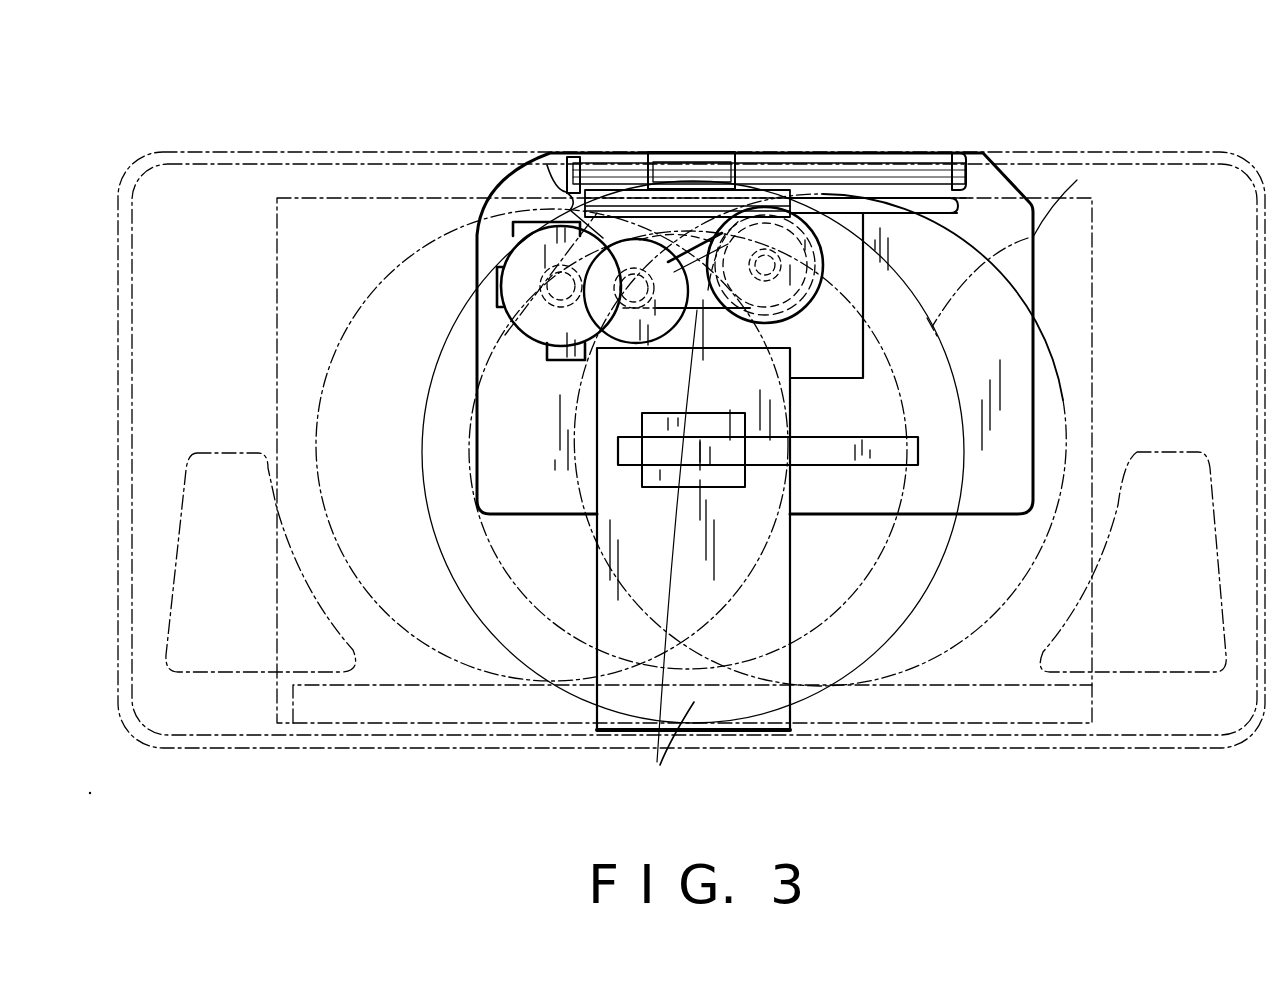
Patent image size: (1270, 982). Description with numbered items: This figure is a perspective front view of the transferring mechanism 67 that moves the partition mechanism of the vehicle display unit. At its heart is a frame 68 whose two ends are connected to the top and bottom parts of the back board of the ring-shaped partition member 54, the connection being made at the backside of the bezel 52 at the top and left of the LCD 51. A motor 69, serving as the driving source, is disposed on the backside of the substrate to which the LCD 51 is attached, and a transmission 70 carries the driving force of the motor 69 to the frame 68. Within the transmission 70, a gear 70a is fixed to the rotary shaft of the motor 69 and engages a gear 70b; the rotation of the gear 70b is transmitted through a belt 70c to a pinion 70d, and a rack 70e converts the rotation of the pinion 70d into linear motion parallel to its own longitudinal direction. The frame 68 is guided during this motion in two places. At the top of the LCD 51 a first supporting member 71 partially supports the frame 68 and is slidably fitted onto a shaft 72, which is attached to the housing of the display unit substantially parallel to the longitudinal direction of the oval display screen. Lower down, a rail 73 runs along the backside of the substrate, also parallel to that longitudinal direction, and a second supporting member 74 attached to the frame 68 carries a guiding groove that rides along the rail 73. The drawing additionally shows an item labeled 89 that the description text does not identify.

The LCD 51 is at (981, 673).
The bezel 52 is at (348, 242).
The ring-shaped partition member 54 is at (1077, 180).
The transferring mechanism 67 is at (760, 137).
The frame 68 is at (597, 562).
The motor 69 is at (542, 262).
The transmission 70 is at (641, 240).
The gear 70a is at (508, 224).
The gear 70b is at (547, 165).
The belt 70c is at (703, 250).
The pinion 70d is at (697, 238).
The rack 70e is at (850, 170).
The first supporting member 71 is at (707, 150).
The shaft 72 is at (722, 222).
The rail 73 is at (887, 435).
The second supporting member 74 is at (647, 423).
The string 89 is at (665, 561).